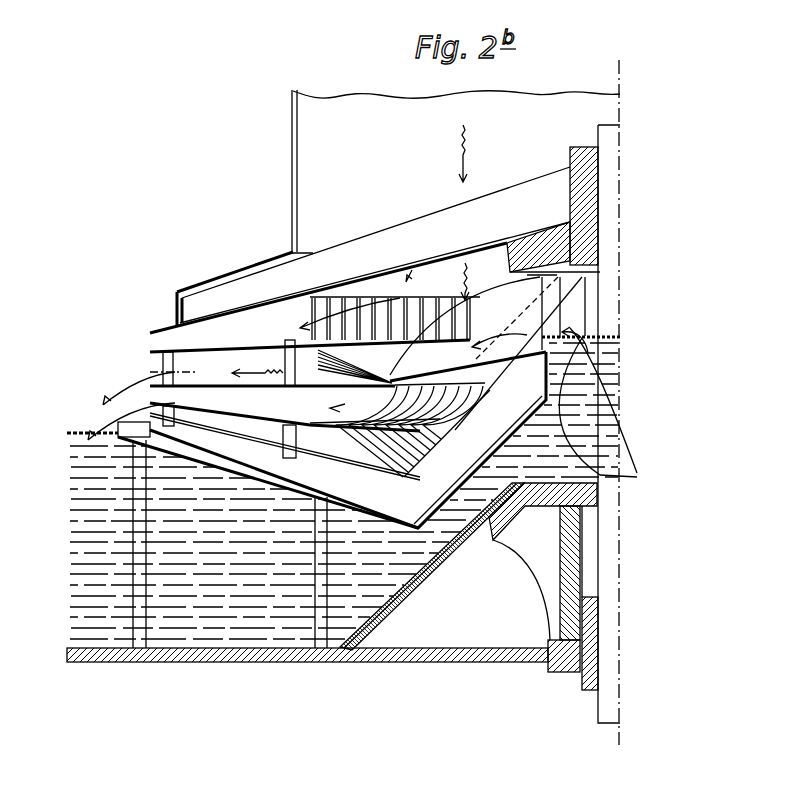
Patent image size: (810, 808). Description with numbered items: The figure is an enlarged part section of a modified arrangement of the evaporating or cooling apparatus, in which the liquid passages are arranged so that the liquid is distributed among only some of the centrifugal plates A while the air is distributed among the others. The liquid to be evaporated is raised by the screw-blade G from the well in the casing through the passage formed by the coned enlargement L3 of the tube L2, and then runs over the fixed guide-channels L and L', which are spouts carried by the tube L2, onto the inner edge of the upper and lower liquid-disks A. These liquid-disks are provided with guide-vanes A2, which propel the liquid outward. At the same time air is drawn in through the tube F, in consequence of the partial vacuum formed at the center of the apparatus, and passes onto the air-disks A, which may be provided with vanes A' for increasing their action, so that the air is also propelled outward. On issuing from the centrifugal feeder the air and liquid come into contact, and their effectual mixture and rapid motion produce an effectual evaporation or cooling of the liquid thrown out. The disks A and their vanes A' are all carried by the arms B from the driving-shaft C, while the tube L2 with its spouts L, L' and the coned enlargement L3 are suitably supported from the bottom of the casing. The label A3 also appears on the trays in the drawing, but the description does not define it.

The centrifugal plates / disks A is at (286, 434).
The vanes A' is at (328, 337).
The guide-vanes A2 is at (325, 377).
The tray compartment A3 is at (288, 333).
The arms B is at (470, 247).
The driving-shaft C is at (596, 402).
The tube F is at (428, 196).
The screw-blade G is at (598, 433).
The guide-channel / spout L is at (468, 322).
The guide-channel / spout L' is at (518, 353).
The tube L2 is at (573, 338).
The coned enlargement L3 is at (490, 461).